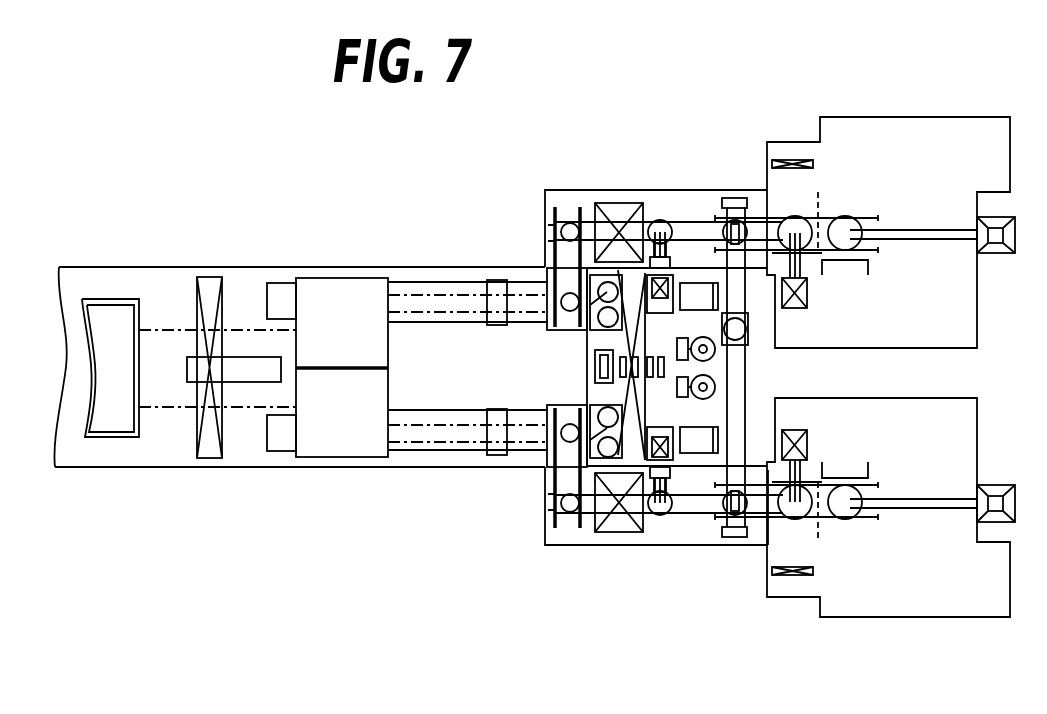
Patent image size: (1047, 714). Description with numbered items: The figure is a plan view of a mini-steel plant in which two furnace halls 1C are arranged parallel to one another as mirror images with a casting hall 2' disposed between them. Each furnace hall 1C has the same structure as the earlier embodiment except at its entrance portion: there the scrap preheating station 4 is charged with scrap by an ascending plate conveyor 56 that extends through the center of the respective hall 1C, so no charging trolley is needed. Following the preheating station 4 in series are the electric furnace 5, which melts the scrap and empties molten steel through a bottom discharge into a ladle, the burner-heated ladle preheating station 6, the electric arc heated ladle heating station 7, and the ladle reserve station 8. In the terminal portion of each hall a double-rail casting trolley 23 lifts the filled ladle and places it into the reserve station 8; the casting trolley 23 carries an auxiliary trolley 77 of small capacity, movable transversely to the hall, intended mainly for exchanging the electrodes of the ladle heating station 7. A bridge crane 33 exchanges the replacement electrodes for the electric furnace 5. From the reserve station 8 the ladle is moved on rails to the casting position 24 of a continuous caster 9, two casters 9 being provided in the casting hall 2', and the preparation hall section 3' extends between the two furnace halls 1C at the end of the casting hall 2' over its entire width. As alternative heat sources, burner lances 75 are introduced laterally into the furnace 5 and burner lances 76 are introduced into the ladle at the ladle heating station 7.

The furnace hall 1C is at (526, 212).
The casting hall 2' is at (299, 417).
The preparation hall section 3' is at (868, 373).
The scrap preheating station 4 is at (851, 226).
The electric furnace 5 is at (789, 522).
The ladle preheating station 6 is at (740, 530).
The ladle heating station 7 is at (660, 515).
The ladle reserve station 8 is at (557, 518).
The continuous caster 9 is at (443, 297).
The casting trolley 23 is at (622, 205).
The casting position 24 is at (568, 430).
The bridge crane 33 is at (784, 160).
The plate conveyor 56 is at (925, 238).
The burner lance 75 is at (790, 213).
The burner lance 76 is at (668, 216).
The auxiliary trolley 77 is at (590, 215).